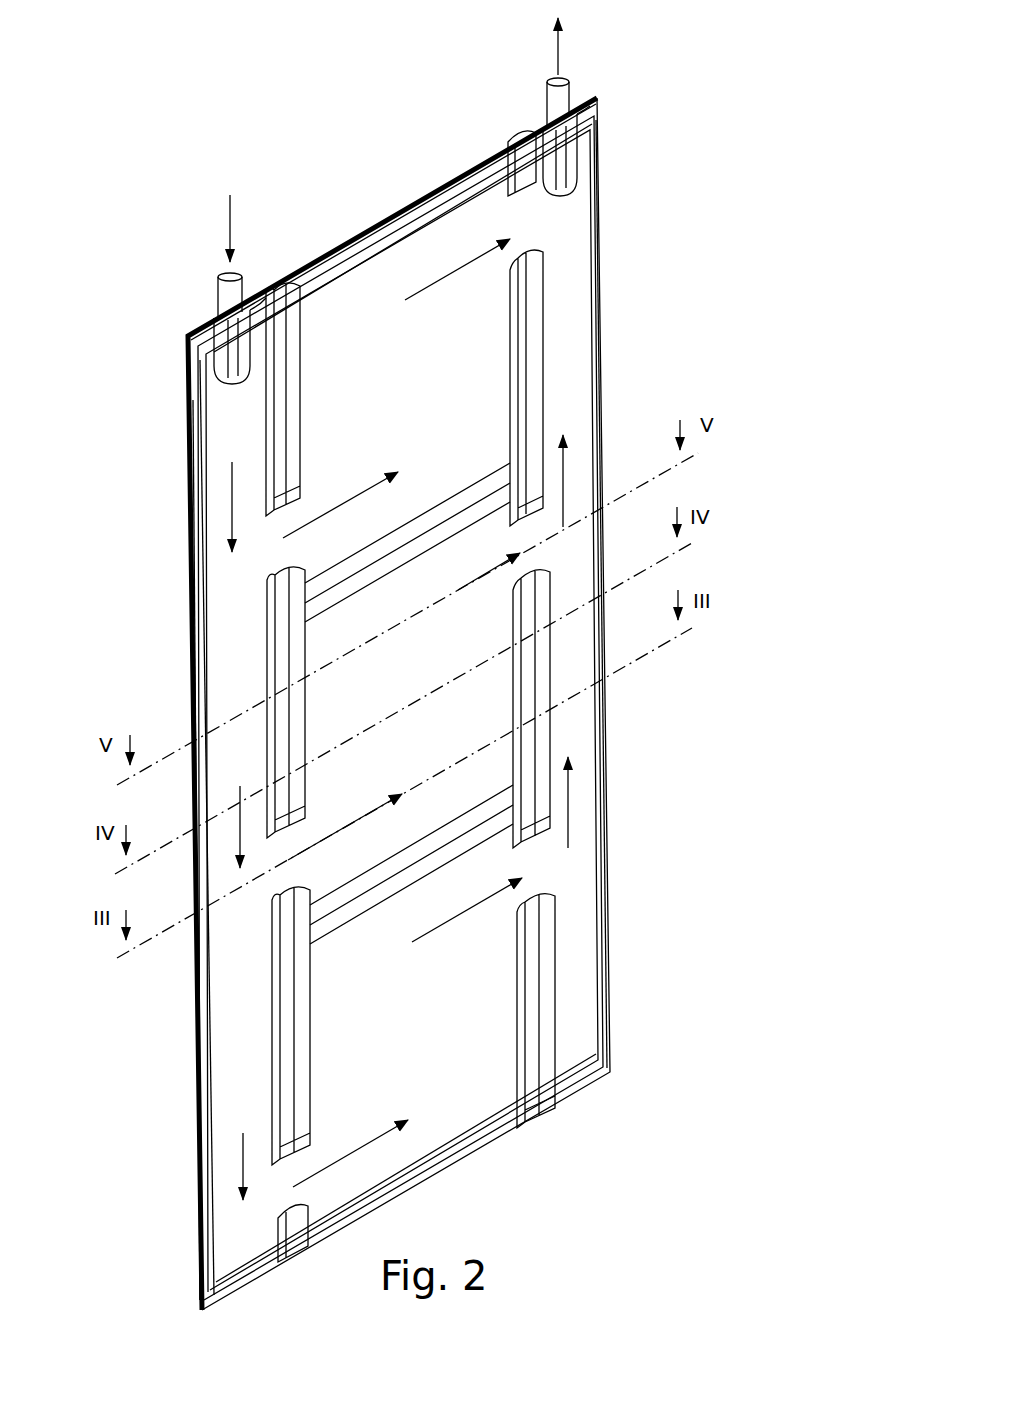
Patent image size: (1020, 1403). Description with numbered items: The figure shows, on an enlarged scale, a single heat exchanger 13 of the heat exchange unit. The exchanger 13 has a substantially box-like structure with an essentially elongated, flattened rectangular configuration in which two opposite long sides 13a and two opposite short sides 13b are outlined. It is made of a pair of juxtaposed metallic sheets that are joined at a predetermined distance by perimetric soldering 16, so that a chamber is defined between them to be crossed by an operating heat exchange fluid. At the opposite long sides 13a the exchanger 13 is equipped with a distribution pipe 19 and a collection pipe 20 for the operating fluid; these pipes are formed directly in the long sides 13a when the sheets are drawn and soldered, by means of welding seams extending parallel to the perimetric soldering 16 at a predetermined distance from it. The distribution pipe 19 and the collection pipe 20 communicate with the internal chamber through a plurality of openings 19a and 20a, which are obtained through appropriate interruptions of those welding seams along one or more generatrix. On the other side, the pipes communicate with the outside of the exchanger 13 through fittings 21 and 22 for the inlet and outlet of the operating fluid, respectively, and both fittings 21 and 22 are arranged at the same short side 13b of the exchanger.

The heat exchanger 13 is at (662, 812).
The long side 13a is at (215, 640).
The short side 13b is at (390, 224).
The perimetric soldering 16 is at (496, 156).
The distribution pipe 19 is at (213, 428).
The openings 19a is at (295, 510).
The collection pipe 20 is at (565, 285).
The openings 20a is at (515, 256).
The inlet fitting 21 is at (215, 302).
The outlet fitting 22 is at (572, 92).